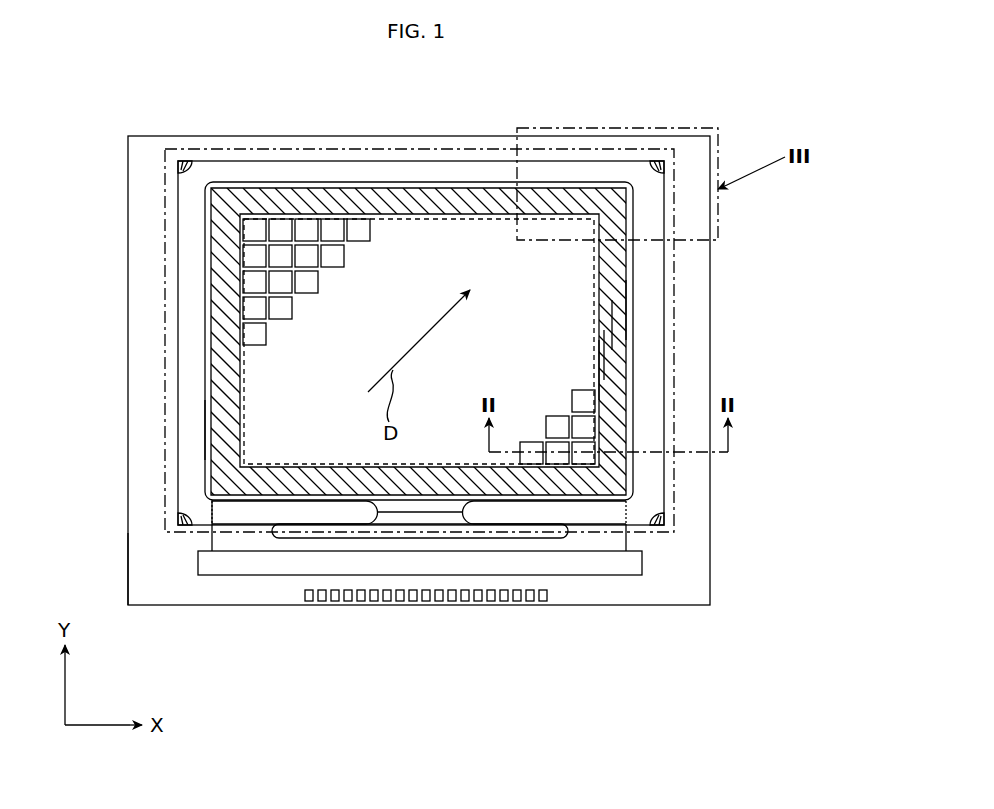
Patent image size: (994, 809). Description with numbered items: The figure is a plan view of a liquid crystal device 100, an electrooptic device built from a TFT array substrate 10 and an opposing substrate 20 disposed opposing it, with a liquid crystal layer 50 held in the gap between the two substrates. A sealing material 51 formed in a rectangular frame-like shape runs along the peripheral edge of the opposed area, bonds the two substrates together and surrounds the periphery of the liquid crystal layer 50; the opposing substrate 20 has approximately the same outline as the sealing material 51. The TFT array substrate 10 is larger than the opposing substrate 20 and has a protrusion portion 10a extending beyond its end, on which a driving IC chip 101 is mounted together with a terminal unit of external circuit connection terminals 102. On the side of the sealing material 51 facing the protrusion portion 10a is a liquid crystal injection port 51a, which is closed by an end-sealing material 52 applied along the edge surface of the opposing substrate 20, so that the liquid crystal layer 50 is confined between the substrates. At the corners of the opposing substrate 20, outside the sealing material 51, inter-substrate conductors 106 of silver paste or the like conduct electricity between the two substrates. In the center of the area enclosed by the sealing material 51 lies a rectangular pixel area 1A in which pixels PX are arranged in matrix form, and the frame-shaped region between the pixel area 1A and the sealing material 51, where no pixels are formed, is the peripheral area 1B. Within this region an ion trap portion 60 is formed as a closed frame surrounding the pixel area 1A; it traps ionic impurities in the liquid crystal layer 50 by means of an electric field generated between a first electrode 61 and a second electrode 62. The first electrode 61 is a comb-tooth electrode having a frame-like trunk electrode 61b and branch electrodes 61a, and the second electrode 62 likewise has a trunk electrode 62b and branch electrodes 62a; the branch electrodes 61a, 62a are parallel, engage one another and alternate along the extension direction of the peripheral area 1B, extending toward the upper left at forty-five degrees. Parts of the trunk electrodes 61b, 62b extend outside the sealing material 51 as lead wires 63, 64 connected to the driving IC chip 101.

The liquid crystal device 100 is at (657, 97).
The TFT array substrate 10 is at (483, 138).
The protrusion portion 10a is at (119, 532).
The opposing substrate 20 is at (562, 148).
The sealing material 51 is at (653, 258).
The liquid crystal injection port 51a is at (462, 524).
The end-sealing material 52 is at (382, 526).
The inter-substrate conductors 106 is at (182, 163).
The peripheral area 1B is at (343, 184).
The pixel area 1A is at (410, 218).
The pixels PX is at (252, 230).
The liquid crystal layer 50 is at (310, 425).
The ion trap portion 60 is at (475, 358).
The first electrode 61 is at (714, 364).
The branch electrodes 61a is at (606, 352).
The trunk electrode 61b is at (598, 368).
The second electrode 62 is at (717, 305).
The branch electrodes 62a is at (610, 333).
The trunk electrode 62b is at (619, 311).
The lead wire 63 is at (622, 542).
The lead wire 64 is at (214, 542).
The driving IC chip 101 is at (573, 566).
The external circuit connection terminals 102 is at (334, 603).